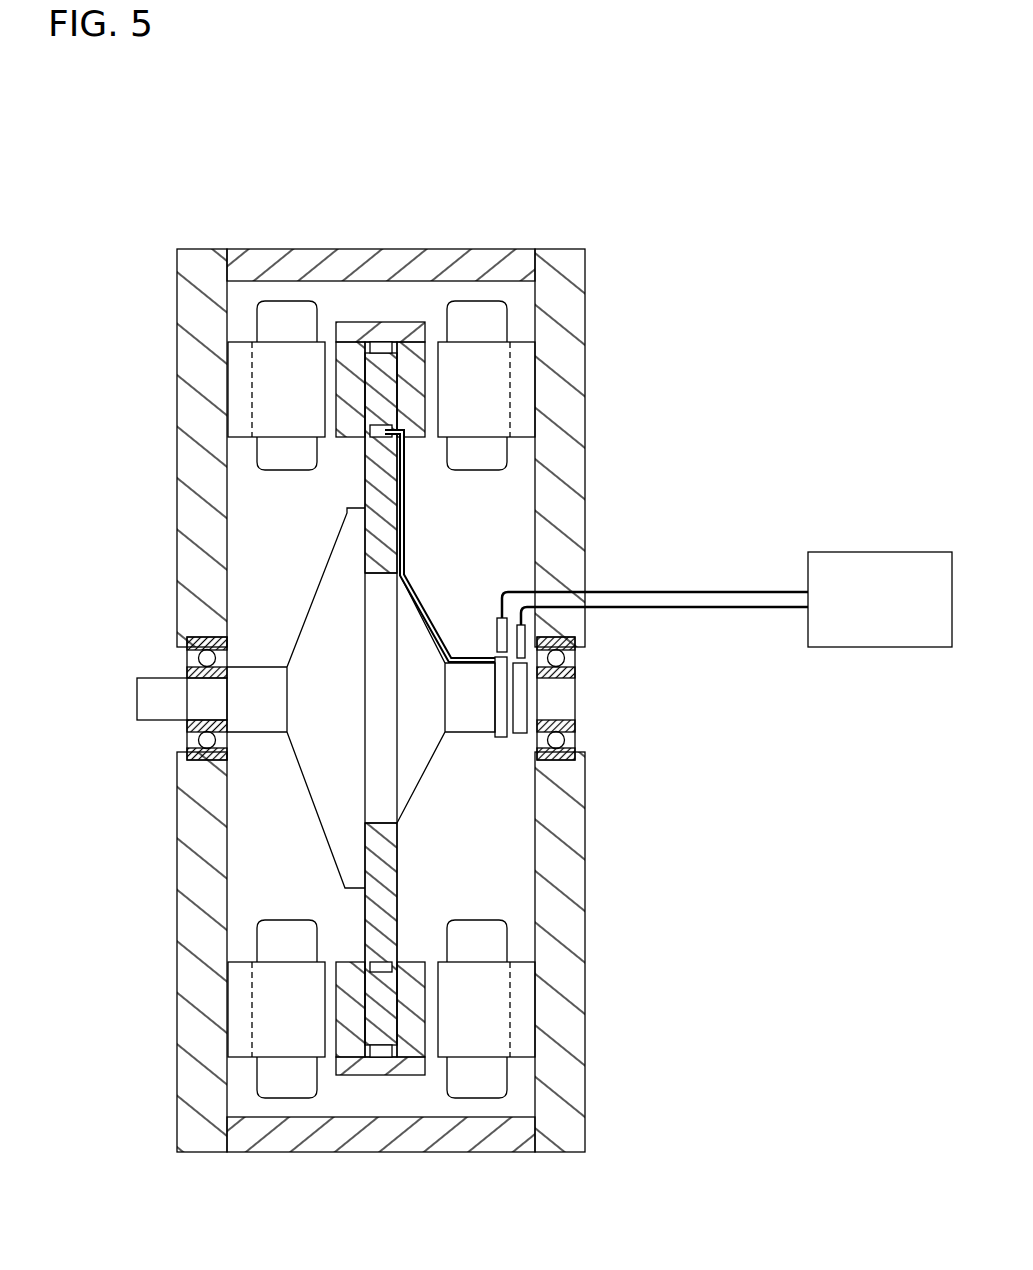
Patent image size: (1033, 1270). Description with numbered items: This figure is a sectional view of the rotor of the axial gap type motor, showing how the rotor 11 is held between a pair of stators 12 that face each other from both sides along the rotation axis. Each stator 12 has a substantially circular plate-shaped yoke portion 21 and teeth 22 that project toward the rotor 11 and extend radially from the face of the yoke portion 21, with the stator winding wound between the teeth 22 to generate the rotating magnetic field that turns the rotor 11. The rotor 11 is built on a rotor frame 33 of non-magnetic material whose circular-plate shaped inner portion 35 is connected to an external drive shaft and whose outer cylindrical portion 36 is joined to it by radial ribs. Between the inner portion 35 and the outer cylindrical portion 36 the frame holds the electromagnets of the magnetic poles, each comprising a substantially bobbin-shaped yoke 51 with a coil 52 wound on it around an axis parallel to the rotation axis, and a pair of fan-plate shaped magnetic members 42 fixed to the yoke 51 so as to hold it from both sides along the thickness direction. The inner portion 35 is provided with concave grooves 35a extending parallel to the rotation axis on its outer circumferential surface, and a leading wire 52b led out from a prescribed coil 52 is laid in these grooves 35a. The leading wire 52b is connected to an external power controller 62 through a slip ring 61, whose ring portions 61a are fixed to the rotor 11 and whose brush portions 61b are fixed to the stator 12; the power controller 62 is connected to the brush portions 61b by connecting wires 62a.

The rotor 11 is at (432, 312).
The stators 12 is at (163, 337).
The yoke portion 21 is at (198, 291).
The teeth 22 is at (285, 428).
The rotor frame 33 is at (384, 682).
The inner portion 35 is at (380, 480).
The concave grooves 35a is at (370, 423).
The outer cylindrical portion 36 is at (368, 330).
The magnetic members 42 is at (350, 397).
The yoke 51 is at (385, 375).
The coil 52 is at (380, 345).
The leading wire 52b is at (402, 517).
The slip ring 61 is at (559, 689).
The ring portions 61a is at (520, 740).
The brush portions 61b is at (518, 640).
The power controller 62 is at (880, 552).
The connecting wires 62a is at (722, 607).